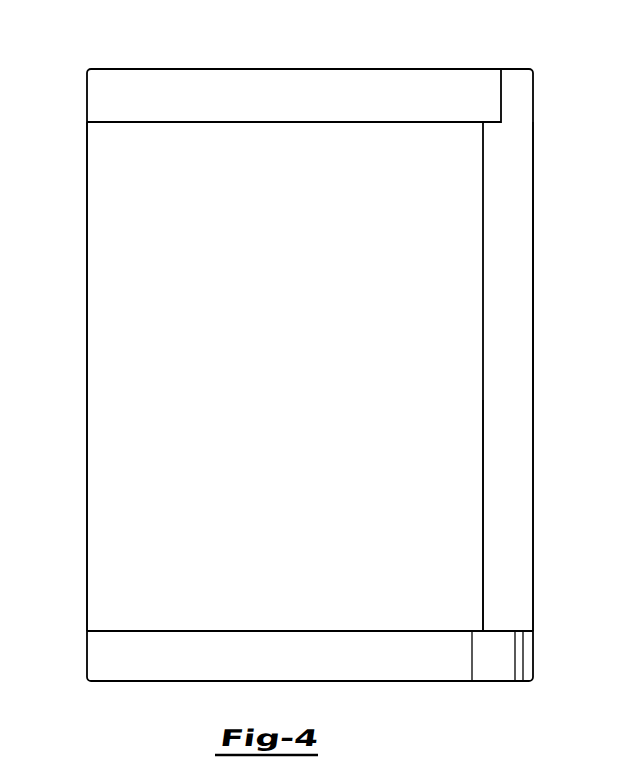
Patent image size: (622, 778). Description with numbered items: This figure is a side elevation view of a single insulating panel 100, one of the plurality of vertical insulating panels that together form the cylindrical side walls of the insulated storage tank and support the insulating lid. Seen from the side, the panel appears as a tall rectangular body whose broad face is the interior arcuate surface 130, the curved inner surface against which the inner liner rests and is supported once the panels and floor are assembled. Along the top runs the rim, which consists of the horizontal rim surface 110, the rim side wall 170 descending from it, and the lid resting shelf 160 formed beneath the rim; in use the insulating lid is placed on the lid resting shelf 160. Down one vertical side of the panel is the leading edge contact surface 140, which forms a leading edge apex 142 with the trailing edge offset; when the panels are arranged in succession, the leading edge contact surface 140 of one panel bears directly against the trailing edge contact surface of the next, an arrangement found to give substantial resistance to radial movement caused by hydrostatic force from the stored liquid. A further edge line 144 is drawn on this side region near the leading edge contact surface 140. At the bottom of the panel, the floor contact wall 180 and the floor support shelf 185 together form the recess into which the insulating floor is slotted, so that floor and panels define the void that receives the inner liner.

The insulating panel 100 is at (542, 412).
The horizontal rim surface 110 is at (358, 69).
The interior arcuate surface 130 is at (115, 193).
The leading edge contact surface 140 is at (513, 215).
The leading edge apex 142 is at (533, 280).
The inner edge of side bezel 144 is at (483, 503).
The lid resting shelf 160 is at (338, 123).
The rim side wall 170 is at (172, 83).
The floor contact wall 180 is at (97, 658).
The floor support shelf 185 is at (295, 631).